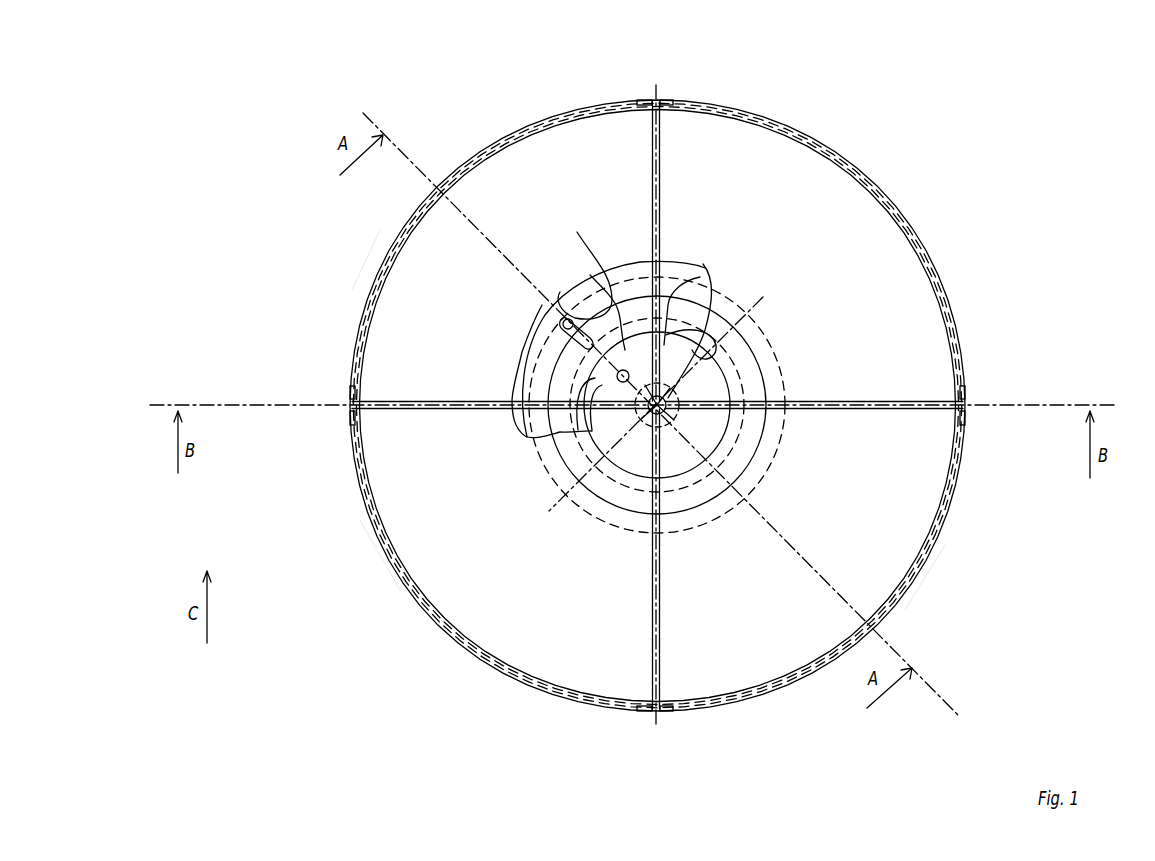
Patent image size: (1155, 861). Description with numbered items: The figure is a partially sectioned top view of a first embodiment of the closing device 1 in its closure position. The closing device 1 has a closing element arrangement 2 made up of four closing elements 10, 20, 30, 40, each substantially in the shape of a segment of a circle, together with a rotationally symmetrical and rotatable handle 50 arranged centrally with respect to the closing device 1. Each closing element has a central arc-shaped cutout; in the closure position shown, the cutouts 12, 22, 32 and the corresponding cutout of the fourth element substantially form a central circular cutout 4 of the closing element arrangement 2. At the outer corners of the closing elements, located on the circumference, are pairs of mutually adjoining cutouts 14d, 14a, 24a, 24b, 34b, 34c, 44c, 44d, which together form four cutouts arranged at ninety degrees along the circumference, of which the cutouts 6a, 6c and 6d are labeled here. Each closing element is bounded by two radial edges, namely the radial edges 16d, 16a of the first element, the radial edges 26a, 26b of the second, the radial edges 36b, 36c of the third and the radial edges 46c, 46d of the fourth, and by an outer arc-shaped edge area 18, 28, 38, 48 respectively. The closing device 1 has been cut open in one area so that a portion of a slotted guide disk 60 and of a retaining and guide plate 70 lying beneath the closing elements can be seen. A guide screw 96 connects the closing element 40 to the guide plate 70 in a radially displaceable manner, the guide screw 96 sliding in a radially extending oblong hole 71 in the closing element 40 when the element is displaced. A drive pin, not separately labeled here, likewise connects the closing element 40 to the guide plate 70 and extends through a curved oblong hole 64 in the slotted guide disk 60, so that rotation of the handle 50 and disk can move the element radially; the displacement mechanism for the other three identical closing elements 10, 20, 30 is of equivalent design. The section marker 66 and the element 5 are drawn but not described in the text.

The closing device 1 is at (942, 214).
The closing element arrangement 2 is at (958, 322).
The central circular cutout 4 is at (668, 430).
The insert piece 5 is at (527, 333).
The cutout 6a is at (967, 418).
The cutout 6c is at (352, 410).
The cutout 6d is at (653, 97).
The closing element 10 is at (825, 300).
The arc-shaped cutout 12 is at (678, 398).
The cutout 14a is at (967, 394).
The cutout 14d is at (667, 97).
The radial edge 16a is at (866, 398).
The radial edge 16d is at (662, 192).
The outer arc-shaped edge area 18 is at (940, 270).
The closing element 20 is at (836, 547).
The arc-shaped cutout 22 is at (620, 377).
The cutout 24a is at (967, 425).
The cutout 24b is at (666, 715).
The radial edge 26a is at (866, 413).
The radial edge 26b is at (662, 653).
The outer arc-shaped edge area 28 is at (940, 542).
The closing element 30 is at (504, 581).
The arc-shaped cutout 32 is at (648, 432).
The cutout 34b is at (645, 714).
The cutout 34c is at (352, 420).
The radial edge 36b is at (652, 653).
The radial edge 36c is at (452, 413).
The outer arc-shaped edge area 38 is at (363, 512).
The closing element 40 is at (463, 262).
The cutout 44c is at (350, 395).
The cutout 44d is at (643, 99).
The radial edge 46c is at (452, 402).
The radial edge 46d is at (650, 192).
The outer arc-shaped edge area 48 is at (358, 288).
The handle 50 is at (745, 420).
The slotted guide disk 60 is at (703, 264).
The curved oblong hole 64 is at (706, 330).
The rim tab 66 is at (652, 716).
The retaining and guide plate 70 is at (634, 290).
The oblong hole 71 is at (585, 266).
The guide screw 96 is at (568, 307).